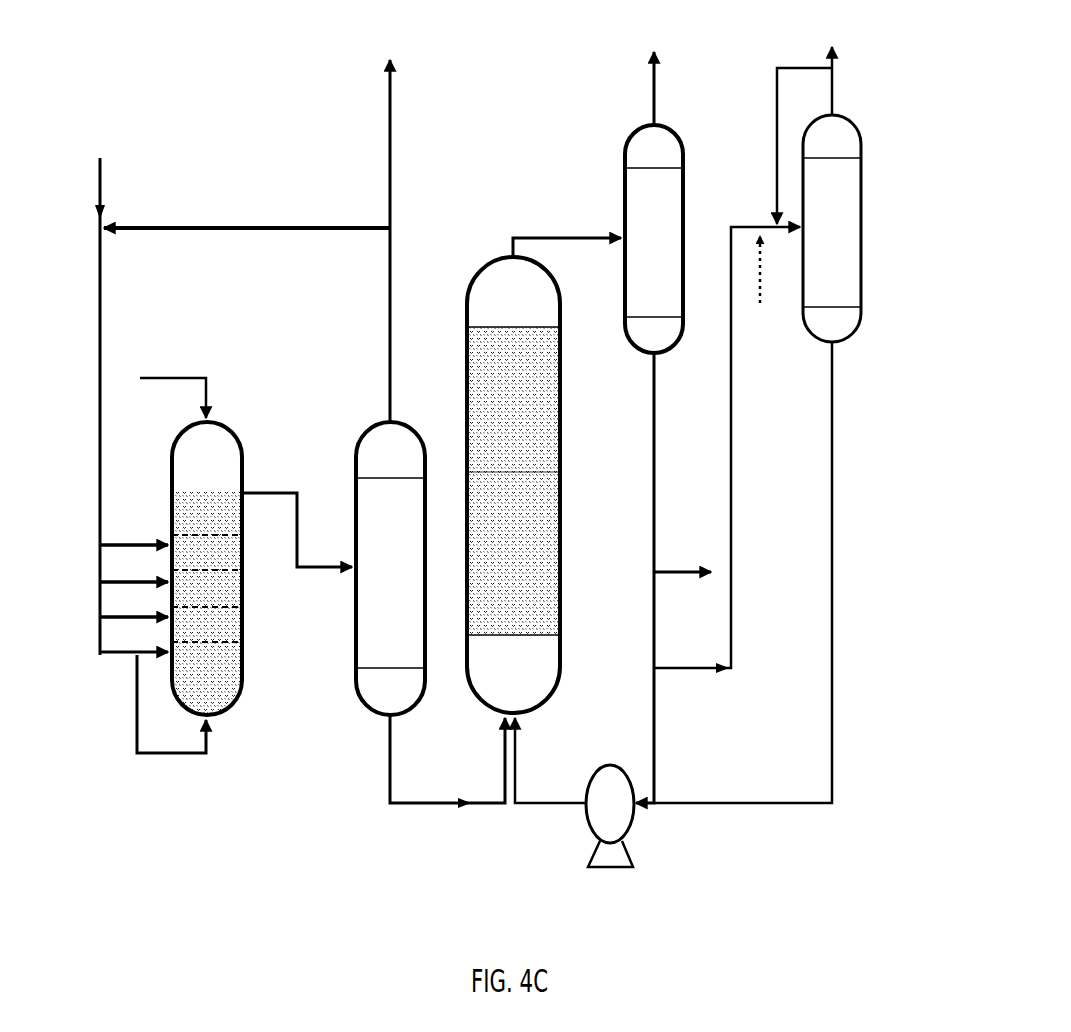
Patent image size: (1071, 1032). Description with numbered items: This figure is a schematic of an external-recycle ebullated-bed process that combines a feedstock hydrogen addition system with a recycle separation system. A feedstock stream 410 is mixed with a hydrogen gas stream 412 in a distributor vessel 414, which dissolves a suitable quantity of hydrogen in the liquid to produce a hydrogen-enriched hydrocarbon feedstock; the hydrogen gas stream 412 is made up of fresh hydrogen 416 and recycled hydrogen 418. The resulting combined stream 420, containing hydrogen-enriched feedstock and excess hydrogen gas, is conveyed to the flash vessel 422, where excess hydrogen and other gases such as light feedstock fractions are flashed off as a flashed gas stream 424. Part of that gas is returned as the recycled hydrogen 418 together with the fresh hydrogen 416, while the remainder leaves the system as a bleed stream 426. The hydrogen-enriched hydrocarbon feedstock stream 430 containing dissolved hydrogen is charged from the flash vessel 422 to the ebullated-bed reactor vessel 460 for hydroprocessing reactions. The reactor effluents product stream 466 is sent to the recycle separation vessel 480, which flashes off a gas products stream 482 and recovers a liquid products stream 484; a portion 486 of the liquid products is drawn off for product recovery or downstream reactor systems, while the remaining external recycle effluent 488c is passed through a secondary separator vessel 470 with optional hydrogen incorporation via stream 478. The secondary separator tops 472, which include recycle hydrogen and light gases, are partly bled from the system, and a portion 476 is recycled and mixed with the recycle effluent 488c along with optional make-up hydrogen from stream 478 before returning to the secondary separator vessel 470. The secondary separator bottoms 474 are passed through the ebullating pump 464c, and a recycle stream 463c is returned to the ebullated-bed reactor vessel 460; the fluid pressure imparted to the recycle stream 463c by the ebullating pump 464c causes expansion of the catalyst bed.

The feedstock stream 410 is at (197, 378).
The hydrogen gas stream 412 is at (100, 478).
The distributor vessel 414 is at (187, 428).
The fresh hydrogen 416 is at (100, 192).
The recycled hydrogen 418 is at (205, 226).
The combined stream 420 is at (340, 565).
The flash vessel 422 is at (385, 424).
The flashed gas stream 424 is at (390, 318).
The bleed stream 426 is at (390, 195).
The hydrogen-enriched hydrocarbon feedstock stream 430 is at (390, 793).
The ebullated-bed reactor vessel 460 is at (493, 262).
The recycle stream 463c is at (512, 806).
The ebullating pump 464c is at (627, 775).
The ebullated-bed reactor effluents product stream 466 is at (553, 236).
The secondary separator vessel 470 is at (812, 127).
The secondary separator tops 472 is at (832, 83).
The secondary separator bottoms 474 is at (832, 618).
The recycled tops portion 476 is at (777, 75).
The optional hydrogen stream 478 is at (766, 288).
The recycle separation vessel 480 is at (632, 137).
The gas products stream 482 is at (654, 83).
The liquid products stream 484 is at (654, 525).
The product draw-off portion 486 is at (695, 563).
The external recycle effluent 488c is at (731, 450).